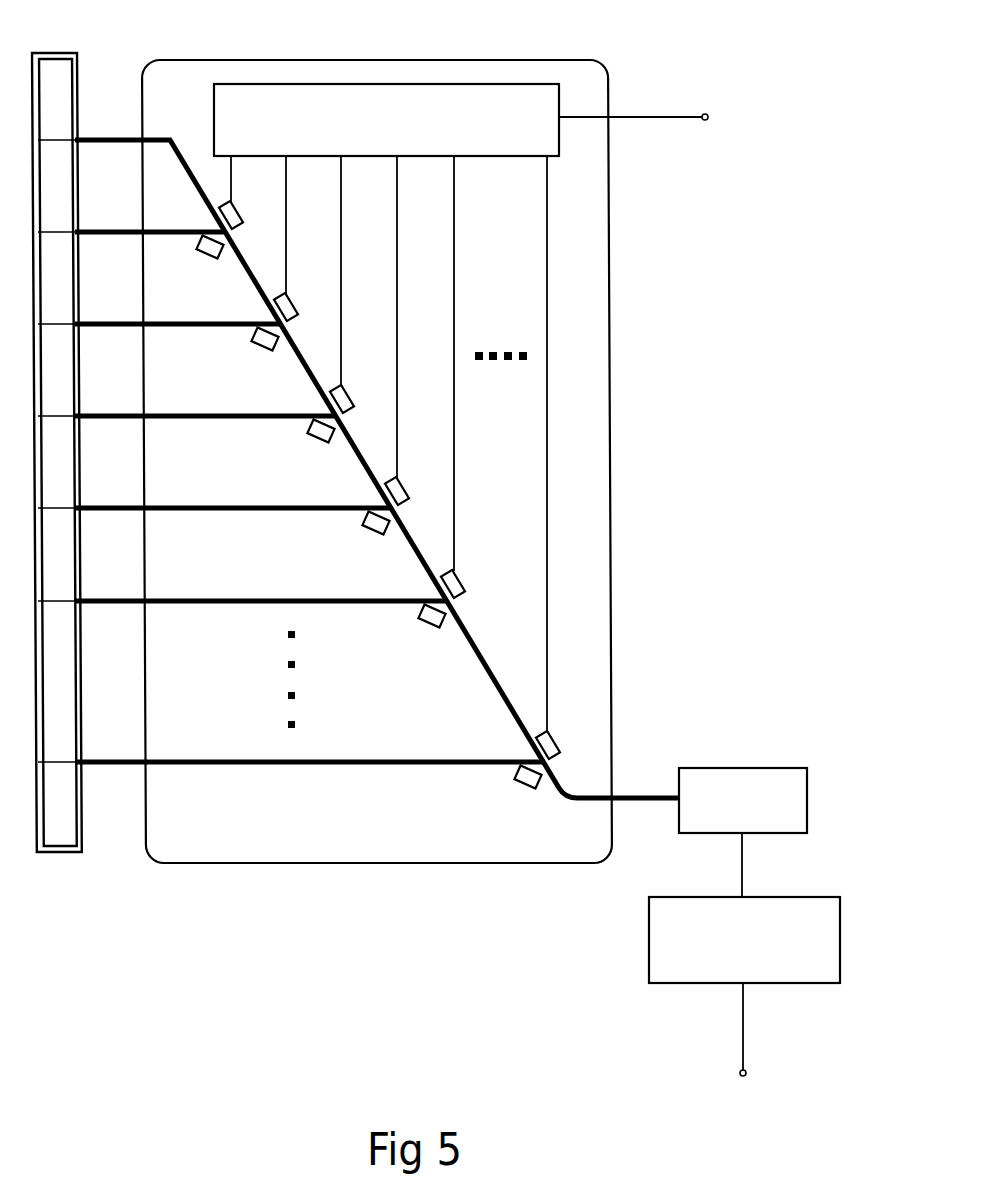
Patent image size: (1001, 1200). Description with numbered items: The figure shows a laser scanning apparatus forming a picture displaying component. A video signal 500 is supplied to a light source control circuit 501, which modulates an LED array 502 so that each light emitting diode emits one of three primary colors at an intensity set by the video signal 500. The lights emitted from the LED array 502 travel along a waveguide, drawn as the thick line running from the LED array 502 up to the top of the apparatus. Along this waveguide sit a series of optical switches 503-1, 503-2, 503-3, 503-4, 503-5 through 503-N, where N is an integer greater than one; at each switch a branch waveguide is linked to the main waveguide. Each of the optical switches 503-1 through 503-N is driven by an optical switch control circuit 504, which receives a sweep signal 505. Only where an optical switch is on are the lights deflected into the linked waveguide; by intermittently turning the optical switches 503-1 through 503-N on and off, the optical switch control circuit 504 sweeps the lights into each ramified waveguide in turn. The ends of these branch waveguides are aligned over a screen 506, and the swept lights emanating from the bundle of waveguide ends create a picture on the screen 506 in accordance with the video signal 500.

The video signal 500 is at (743, 1052).
The light source control circuit 501 is at (823, 963).
The LED array 502 is at (763, 782).
The optical switch 503-1 is at (208, 259).
The optical switch 503-2 is at (263, 353).
The optical switch 503-3 is at (317, 447).
The optical switch 503-4 is at (370, 542).
The optical switch 503-5 is at (427, 633).
The optical switch 503-N is at (523, 790).
The optical switch control circuit 504 is at (527, 98).
The sweep signal 505 is at (664, 118).
The screen 506 is at (46, 51).